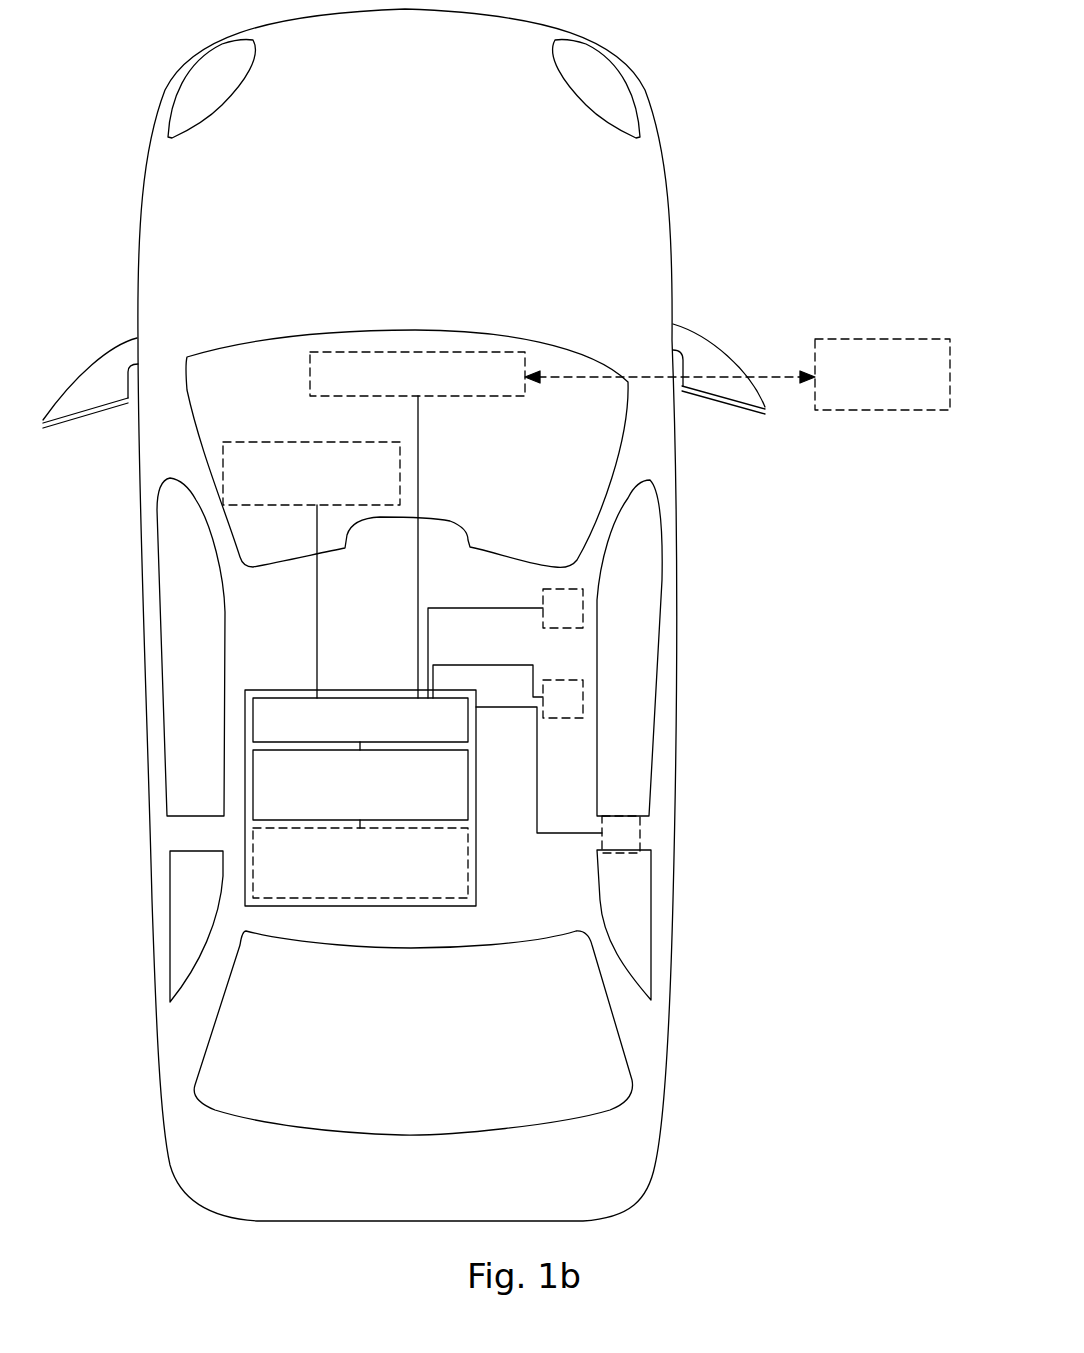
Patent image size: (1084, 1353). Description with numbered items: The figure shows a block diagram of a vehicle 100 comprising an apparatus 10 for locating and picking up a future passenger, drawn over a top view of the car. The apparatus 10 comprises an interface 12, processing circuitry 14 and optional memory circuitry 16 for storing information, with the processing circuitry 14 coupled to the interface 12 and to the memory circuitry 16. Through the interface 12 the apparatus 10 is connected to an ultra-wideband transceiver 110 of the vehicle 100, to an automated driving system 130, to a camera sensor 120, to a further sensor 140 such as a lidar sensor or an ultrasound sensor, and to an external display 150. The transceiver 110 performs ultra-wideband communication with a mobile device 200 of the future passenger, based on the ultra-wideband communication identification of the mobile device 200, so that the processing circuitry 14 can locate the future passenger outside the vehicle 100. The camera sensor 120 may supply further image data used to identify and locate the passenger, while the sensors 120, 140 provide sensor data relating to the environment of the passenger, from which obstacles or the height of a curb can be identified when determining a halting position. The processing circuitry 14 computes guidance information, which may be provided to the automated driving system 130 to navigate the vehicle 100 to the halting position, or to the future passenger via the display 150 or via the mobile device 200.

The apparatus 10 is at (391, 801).
The interface 12 is at (468, 718).
The processing circuitry 14 is at (468, 783).
The memory circuitry 16 is at (468, 883).
The vehicle 100 is at (657, 1166).
The ultra-wideband transceiver 110 is at (309, 397).
The camera sensor 120 is at (583, 613).
The automated driving system 130 is at (223, 477).
The lidar/ultrasound sensor 140 is at (583, 698).
The display 150 is at (642, 833).
The mobile device 200 is at (880, 410).